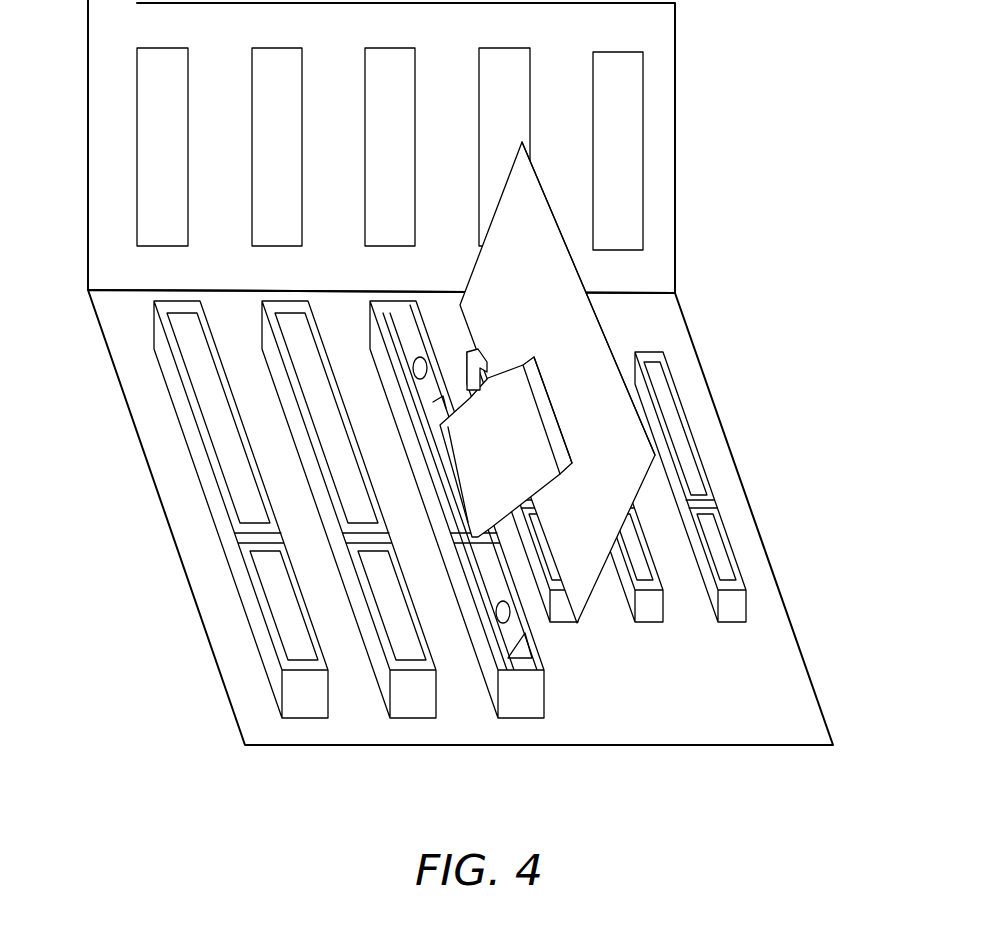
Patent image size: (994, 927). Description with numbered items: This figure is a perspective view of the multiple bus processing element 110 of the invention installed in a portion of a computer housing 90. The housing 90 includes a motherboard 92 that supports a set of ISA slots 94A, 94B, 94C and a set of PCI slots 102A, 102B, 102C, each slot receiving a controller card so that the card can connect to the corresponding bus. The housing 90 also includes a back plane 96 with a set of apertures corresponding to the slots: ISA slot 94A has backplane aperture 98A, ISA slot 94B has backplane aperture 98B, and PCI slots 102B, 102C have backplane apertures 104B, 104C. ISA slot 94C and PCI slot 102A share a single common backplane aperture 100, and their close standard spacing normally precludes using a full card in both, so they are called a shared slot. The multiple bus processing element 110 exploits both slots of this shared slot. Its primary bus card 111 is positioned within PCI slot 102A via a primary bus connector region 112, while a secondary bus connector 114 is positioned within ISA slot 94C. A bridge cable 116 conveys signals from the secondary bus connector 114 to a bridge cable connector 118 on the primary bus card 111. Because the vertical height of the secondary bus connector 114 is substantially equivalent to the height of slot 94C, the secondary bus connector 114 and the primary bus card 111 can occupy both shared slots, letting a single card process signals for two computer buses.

The computer housing 90 is at (753, 207).
The motherboard 92 is at (160, 452).
The ISA slot 94A is at (303, 707).
The ISA slot 94B is at (410, 710).
The ISA slot 94C is at (525, 710).
The back plane 96 is at (103, 195).
The backplane aperture 98A is at (165, 246).
The backplane aperture 98B is at (280, 246).
The backplane aperture 100 is at (387, 246).
The PCI slot 102A is at (562, 608).
The PCI slot 102B is at (643, 613).
The PCI slot 102C is at (737, 603).
The backplane aperture 104B is at (513, 63).
The backplane aperture 104C is at (629, 62).
The multiple bus processing element 110 is at (468, 258).
The primary bus card 111 is at (587, 338).
The primary bus connector region 112 is at (477, 345).
The secondary bus connector 114 is at (433, 402).
The bridge cable 116 is at (535, 463).
The bridge cable connector 118 is at (542, 412).